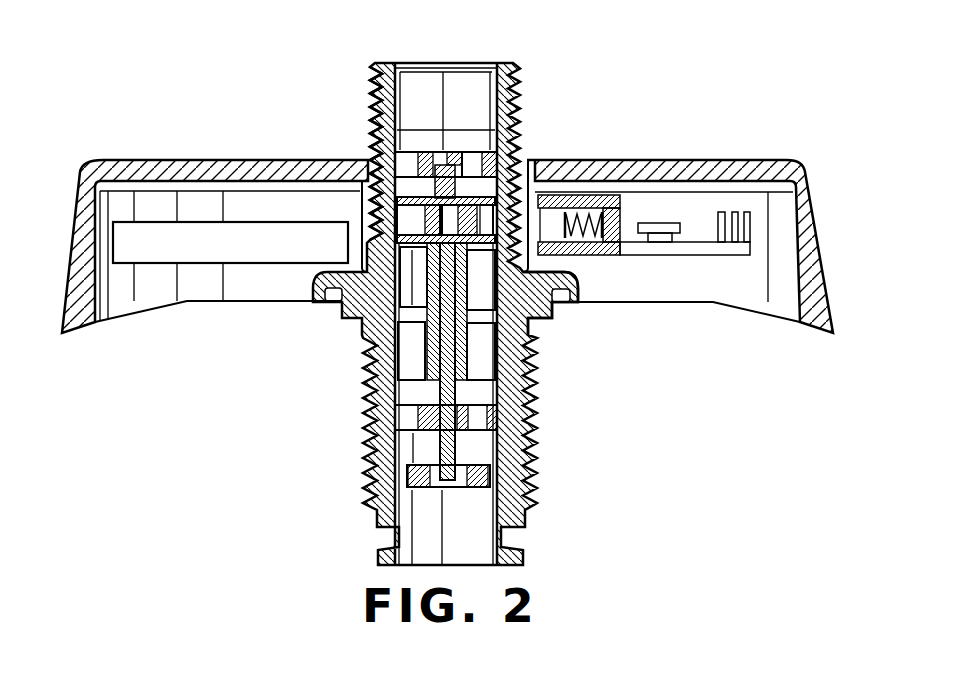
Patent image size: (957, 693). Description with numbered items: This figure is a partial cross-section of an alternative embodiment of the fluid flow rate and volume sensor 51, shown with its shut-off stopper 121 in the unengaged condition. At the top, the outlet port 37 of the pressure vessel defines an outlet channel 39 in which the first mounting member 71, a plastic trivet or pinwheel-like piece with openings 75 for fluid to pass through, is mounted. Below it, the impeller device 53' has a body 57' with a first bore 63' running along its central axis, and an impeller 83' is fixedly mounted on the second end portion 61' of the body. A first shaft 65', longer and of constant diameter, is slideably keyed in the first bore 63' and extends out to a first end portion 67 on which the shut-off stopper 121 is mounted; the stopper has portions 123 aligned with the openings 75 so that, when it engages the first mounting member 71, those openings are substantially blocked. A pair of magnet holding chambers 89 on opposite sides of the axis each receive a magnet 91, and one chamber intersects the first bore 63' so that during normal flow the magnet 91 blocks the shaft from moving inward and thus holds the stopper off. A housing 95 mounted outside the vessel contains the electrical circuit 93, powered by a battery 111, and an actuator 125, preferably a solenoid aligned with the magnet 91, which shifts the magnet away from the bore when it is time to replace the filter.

The fluid flow rate and volume sensor 51 is at (548, 92).
The outlet port 37 is at (372, 92).
The outlet channel 39 is at (455, 90).
The magnet holding chambers 89 is at (372, 205).
The magnet 91 is at (398, 233).
The first bore 63' is at (472, 361).
The second end portion 61' is at (372, 324).
The first shaft 65' is at (532, 325).
The body 57' is at (367, 307).
The impeller 83' is at (534, 315).
The first mounting member 71 is at (413, 432).
The openings 75 is at (413, 413).
The first end portion 67 is at (458, 450).
The shut-off stopper 121 is at (490, 480).
The portions 123 is at (410, 470).
The impeller device 53' is at (593, 306).
The housing 95 is at (210, 158).
The battery 111 is at (202, 242).
The actuator 125 is at (598, 212).
The electrical circuit 93 is at (702, 250).